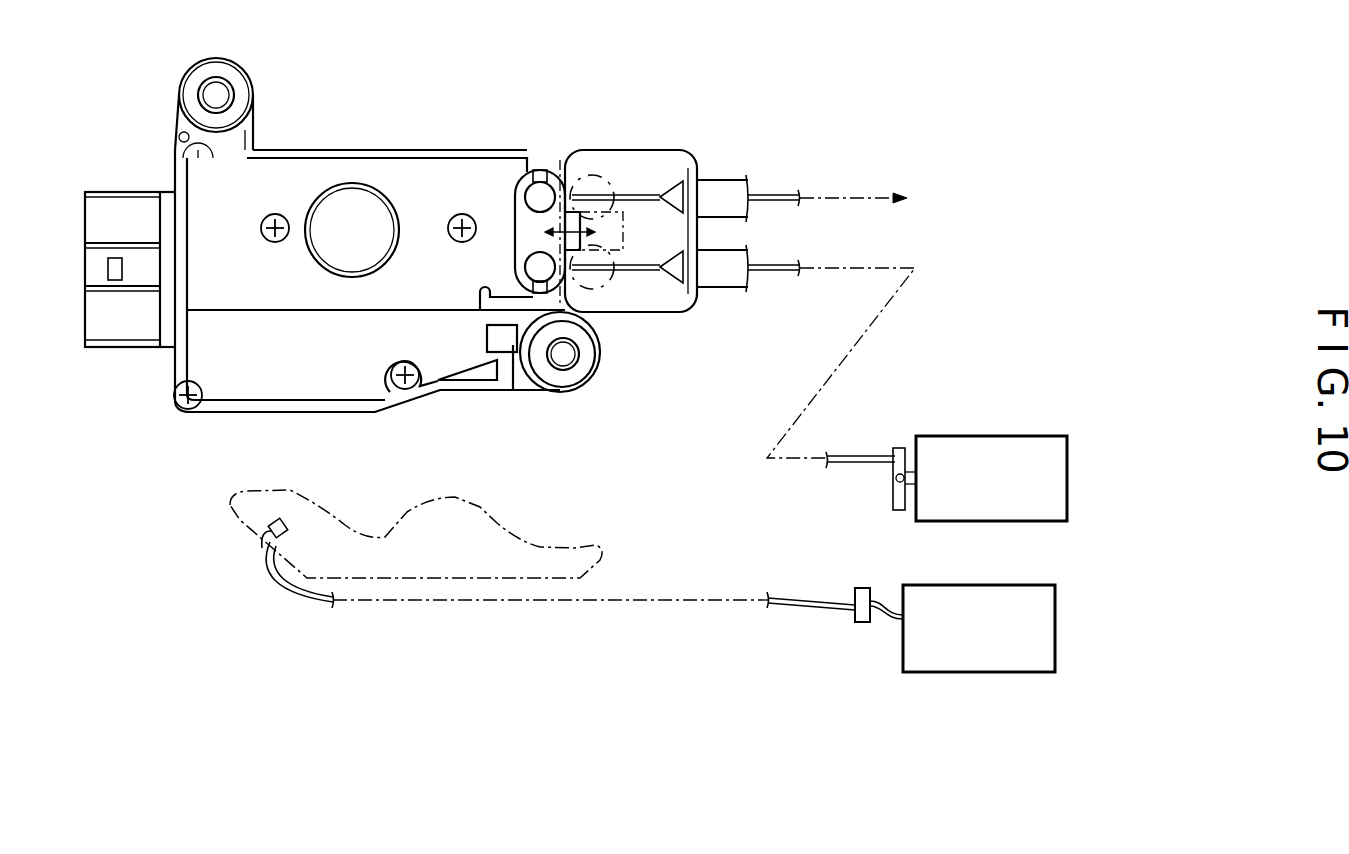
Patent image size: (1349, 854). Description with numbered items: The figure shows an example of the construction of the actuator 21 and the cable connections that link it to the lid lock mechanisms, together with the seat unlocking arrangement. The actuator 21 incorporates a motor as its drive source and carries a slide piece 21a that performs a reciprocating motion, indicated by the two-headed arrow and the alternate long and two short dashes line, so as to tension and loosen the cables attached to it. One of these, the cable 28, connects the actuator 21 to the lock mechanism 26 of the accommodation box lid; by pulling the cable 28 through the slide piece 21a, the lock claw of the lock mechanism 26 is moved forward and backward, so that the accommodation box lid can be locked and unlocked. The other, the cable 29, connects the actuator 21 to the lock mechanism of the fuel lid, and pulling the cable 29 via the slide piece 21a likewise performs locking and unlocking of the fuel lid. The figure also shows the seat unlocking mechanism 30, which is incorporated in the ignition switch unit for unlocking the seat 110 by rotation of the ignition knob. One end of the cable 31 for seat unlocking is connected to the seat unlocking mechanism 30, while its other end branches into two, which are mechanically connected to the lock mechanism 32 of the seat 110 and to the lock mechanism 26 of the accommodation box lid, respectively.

The actuator 21 is at (413, 183).
The slide piece 21a is at (522, 172).
The cable 29 is at (855, 196).
The cable 28 is at (880, 318).
The lock mechanism 26 is at (1018, 436).
The seat unlocking mechanism 30 is at (1010, 673).
The cable 31 is at (797, 607).
The lock mechanism 32 is at (268, 528).
The seat 110 is at (603, 555).